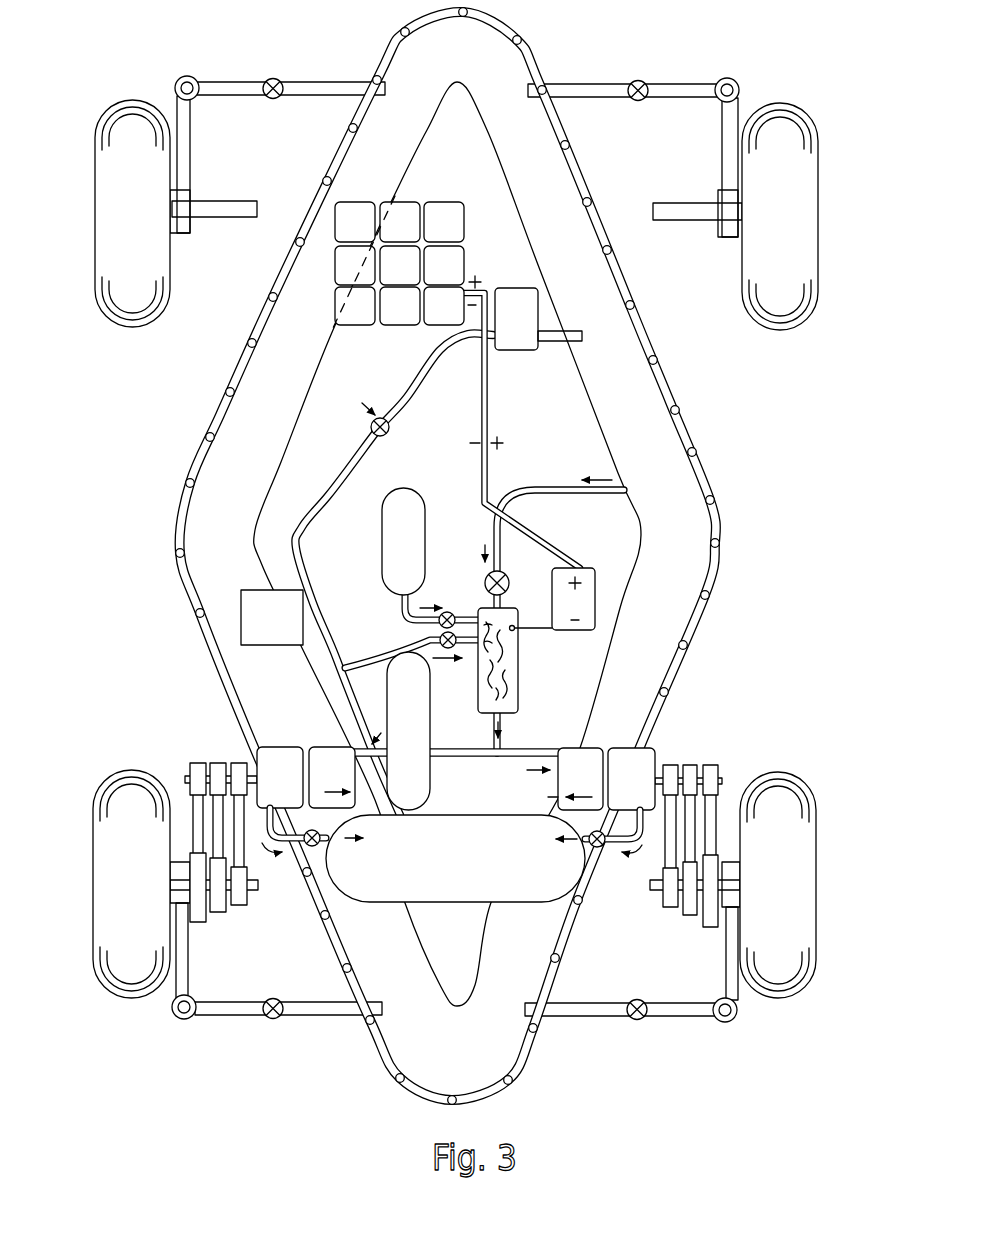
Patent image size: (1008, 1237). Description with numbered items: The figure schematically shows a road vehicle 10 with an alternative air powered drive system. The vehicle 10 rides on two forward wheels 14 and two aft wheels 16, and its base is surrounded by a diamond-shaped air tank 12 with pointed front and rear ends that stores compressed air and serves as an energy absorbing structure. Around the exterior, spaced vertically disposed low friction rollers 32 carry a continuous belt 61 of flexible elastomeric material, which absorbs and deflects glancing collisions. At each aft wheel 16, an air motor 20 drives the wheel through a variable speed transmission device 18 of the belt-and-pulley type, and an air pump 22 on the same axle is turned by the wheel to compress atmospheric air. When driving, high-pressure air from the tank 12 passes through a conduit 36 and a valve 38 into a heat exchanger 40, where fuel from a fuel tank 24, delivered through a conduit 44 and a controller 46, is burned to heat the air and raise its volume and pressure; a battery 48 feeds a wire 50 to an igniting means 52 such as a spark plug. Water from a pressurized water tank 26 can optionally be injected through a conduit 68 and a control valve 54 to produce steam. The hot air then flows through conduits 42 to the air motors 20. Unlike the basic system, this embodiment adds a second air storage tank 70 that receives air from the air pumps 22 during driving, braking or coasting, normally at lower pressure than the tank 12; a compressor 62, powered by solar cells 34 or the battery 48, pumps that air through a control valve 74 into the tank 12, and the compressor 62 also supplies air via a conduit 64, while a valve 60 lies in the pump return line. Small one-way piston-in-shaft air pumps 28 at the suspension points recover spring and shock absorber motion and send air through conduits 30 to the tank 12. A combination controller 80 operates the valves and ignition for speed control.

The road vehicle 10 is at (768, 447).
The air tank 12 is at (282, 463).
The forward wheels 14 is at (93, 211).
The aft wheels 16 is at (93, 880).
The variable speed transmission device 18 is at (193, 756).
The air motor 20 is at (318, 745).
The air pump 22 is at (263, 745).
The fuel tank 24 is at (428, 518).
The pressurized water tank 26 is at (431, 730).
The one-way linear piston-in-shaft air pump 28 is at (187, 76).
The conduit 30 is at (250, 82).
The rollers 32 is at (428, 556).
The solar cells 34 is at (404, 324).
The conduit 36 is at (545, 486).
The valve 38 is at (508, 577).
The heat exchanger 40 is at (521, 685).
The conduit 42 is at (502, 736).
The conduit 44 is at (420, 618).
The controller 46 is at (447, 610).
The battery 48 is at (592, 567).
The wire 50 is at (538, 626).
The igniting means 52 is at (517, 632).
The control valve 54 is at (435, 639).
The valve 60 is at (188, 472).
The continuous belt 61 is at (178, 505).
The air compressor 62 is at (515, 352).
The conduit 64 is at (562, 344).
The conduit 68 is at (392, 653).
The second air storage tank 70 is at (465, 904).
The control valve 74 is at (390, 429).
The combination controller 80 is at (241, 632).